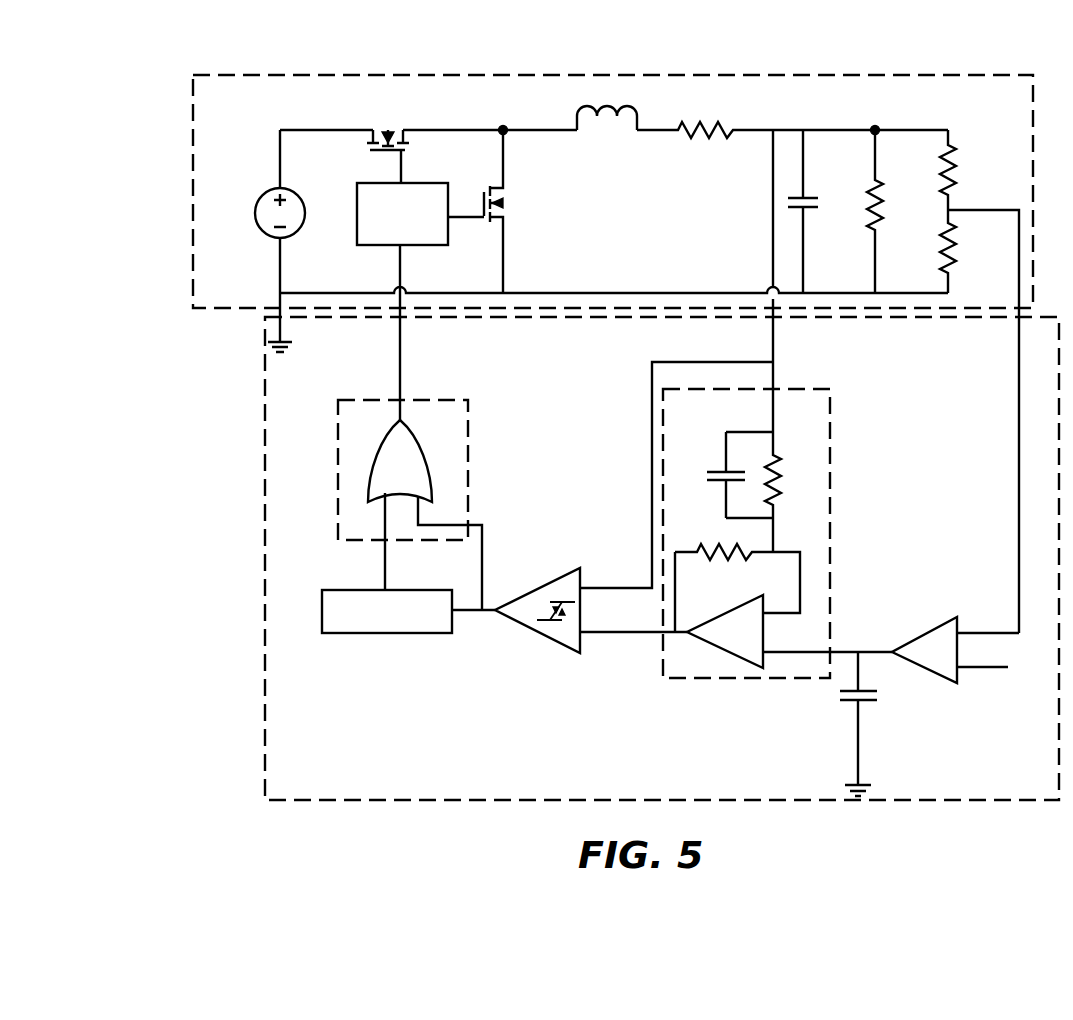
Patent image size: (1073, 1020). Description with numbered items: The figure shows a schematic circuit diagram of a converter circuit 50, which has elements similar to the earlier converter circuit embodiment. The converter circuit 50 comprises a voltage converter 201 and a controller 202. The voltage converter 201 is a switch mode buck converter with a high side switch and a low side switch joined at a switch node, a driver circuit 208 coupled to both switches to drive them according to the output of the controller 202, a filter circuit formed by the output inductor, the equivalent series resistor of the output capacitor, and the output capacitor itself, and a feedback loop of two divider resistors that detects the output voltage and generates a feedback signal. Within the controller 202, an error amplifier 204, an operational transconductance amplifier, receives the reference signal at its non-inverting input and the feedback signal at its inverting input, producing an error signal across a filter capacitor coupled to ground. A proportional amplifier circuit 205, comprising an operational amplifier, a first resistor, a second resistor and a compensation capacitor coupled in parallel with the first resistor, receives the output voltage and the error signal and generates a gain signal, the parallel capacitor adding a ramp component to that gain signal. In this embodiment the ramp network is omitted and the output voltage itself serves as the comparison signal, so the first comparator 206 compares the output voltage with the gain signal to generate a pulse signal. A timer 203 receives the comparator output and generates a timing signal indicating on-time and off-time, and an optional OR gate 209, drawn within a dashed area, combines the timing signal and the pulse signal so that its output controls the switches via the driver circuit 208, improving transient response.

The converter circuit 50 is at (636, 46).
The voltage converter 201 is at (392, 74).
The controller 202 is at (265, 426).
The timer 203 is at (414, 640).
The error amplifier 204 is at (933, 679).
The proportional amplifier circuit 205 is at (830, 535).
The first comparator 206 is at (538, 588).
The driver circuit 208 is at (357, 216).
The OR gate 209 is at (468, 481).